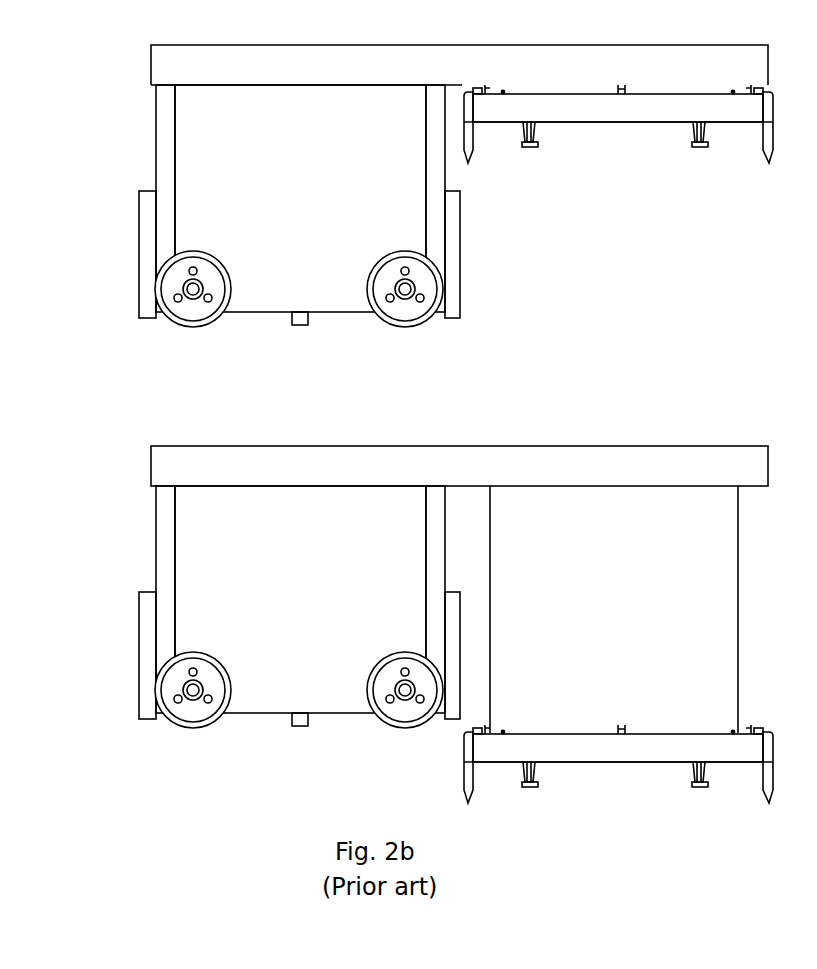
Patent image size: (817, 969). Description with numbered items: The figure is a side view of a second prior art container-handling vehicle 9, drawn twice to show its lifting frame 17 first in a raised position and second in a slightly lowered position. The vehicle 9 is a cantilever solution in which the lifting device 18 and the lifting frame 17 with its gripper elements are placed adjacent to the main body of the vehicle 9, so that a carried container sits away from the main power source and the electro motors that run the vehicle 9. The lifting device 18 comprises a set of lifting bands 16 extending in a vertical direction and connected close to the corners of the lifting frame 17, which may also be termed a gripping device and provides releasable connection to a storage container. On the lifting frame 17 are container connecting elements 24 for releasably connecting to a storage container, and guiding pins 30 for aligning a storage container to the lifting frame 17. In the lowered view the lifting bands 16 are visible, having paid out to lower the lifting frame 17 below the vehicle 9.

The container-handling vehicle 9 is at (106, 331).
The lifting bands 16 is at (491, 651).
The lifting frame 17 is at (613, 762).
The lifting device 18 is at (629, 156).
The container connecting elements 24 is at (535, 127).
The guiding pins 30 is at (471, 153).